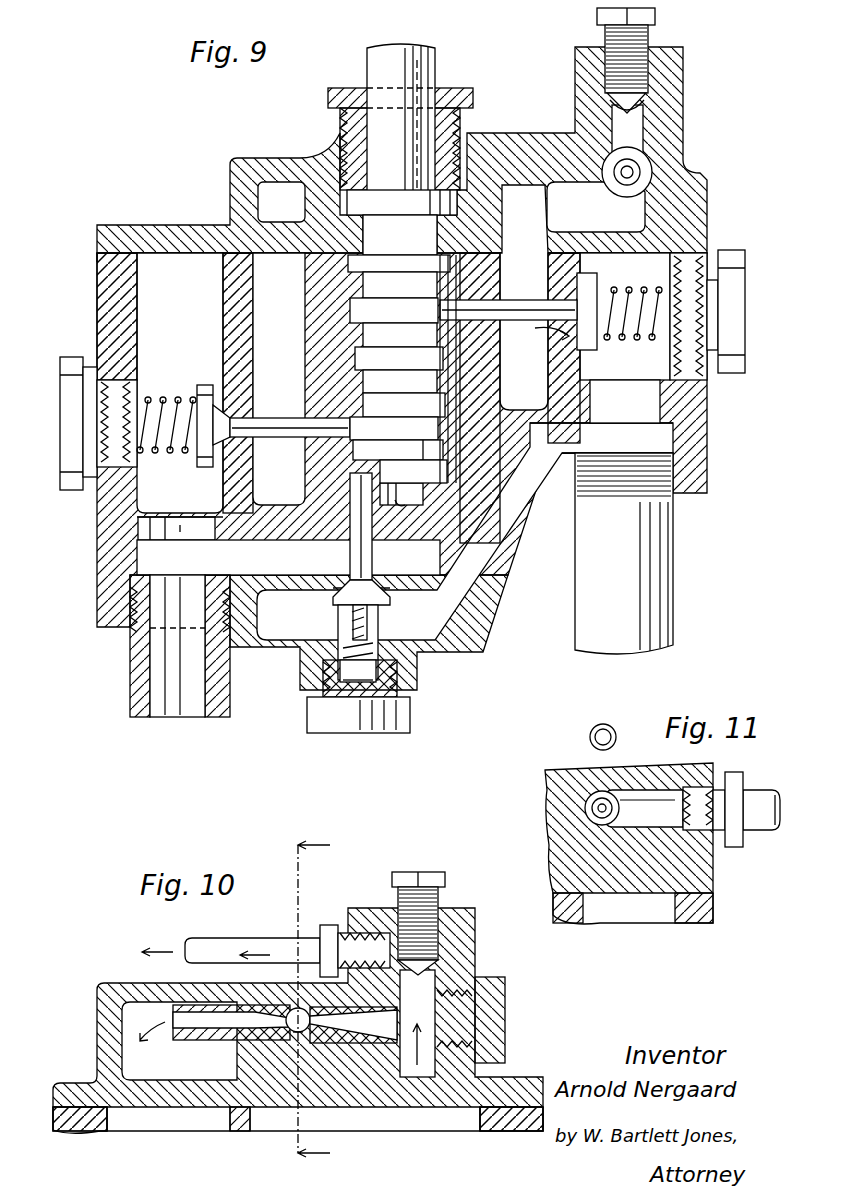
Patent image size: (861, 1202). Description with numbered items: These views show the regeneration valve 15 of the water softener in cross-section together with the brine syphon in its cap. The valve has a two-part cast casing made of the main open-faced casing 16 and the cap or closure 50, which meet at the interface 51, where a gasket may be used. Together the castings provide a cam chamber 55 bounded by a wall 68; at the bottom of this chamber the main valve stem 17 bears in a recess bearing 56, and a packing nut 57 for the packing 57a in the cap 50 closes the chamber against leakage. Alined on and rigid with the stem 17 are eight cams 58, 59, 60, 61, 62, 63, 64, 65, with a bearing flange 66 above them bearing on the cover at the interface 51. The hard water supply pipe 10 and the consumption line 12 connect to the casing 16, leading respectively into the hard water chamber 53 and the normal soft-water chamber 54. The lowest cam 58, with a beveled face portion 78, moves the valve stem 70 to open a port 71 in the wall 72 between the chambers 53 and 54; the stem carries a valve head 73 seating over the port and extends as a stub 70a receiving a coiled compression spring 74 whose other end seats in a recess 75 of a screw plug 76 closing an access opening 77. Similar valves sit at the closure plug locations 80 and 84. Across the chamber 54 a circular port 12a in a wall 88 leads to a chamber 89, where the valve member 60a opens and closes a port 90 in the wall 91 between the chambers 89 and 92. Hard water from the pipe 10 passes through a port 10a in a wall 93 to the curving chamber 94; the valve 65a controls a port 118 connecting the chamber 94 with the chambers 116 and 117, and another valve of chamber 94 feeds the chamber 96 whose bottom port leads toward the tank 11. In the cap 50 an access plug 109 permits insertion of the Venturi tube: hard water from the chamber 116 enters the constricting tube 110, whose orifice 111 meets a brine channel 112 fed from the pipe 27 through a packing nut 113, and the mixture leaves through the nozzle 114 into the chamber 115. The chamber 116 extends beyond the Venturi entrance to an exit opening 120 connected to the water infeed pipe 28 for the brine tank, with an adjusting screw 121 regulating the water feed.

In FIG. 9, the hard water supply pipe 10 is at (668, 580).
In FIG. 9, the port 10a is at (631, 405).
In FIG. 10, the tank 11 is at (327, 1001).
In FIG. 9, the consumption line 12 is at (135, 685).
In FIG. 9, the circular port 12a is at (172, 534).
In FIG. 9, the valve 15 is at (84, 265).
In FIG. 9, the main open-faced casing 16 is at (97, 292).
In FIG. 10, the main open-faced casing 16 is at (56, 1120).
In FIG. 11, the main open-faced casing 16 is at (713, 920).
In FIG. 9, the main valve stem 17 is at (437, 62).
In FIG. 11, the brine pipe 27 is at (768, 834).
In FIG. 10, the water infeed pipe 28 is at (222, 946).
In FIG. 11, the water infeed pipe 28 is at (605, 724).
In FIG. 9, the casing cap 50 is at (219, 200).
In FIG. 10, the casing cap 50 is at (86, 1001).
In FIG. 11, the casing cap 50 is at (713, 880).
In FIG. 9, the interface 51 is at (128, 258).
In FIG. 10, the interface 51 is at (75, 1112).
In FIG. 11, the interface 51 is at (705, 902).
In FIG. 9, the hard water chamber 53 is at (478, 592).
In FIG. 9, the normal soft-water chamber 54 is at (150, 562).
In FIG. 9, the cam chamber 55 is at (478, 384).
In FIG. 9, the recess bearing 56 is at (400, 505).
In FIG. 9, the packing nut 57 is at (470, 92).
In FIG. 9, the packing 57a is at (385, 198).
In FIG. 9, the cam 58 is at (415, 481).
In FIG. 9, the cam 59 is at (391, 459).
In FIG. 9, the cam 60 is at (399, 437).
In FIG. 9, the valve member 60a is at (284, 438).
In FIG. 9, the cam 61 is at (399, 413).
In FIG. 9, the cam 62 is at (399, 390).
In FIG. 9, the cam 63 is at (399, 367).
In FIG. 9, the cam 64 is at (399, 343).
In FIG. 9, the cam 65 is at (394, 319).
In FIG. 9, the valve 65a is at (528, 312).
In FIG. 9, the bearing flange 66 is at (399, 276).
In FIG. 9, the wall 68 is at (488, 282).
In FIG. 9, the valve stem 70 is at (372, 553).
In FIG. 9, the stub 70a is at (368, 624).
In FIG. 9, the port 71 is at (346, 578).
In FIG. 9, the wall 72 is at (290, 590).
In FIG. 9, the valve head 73 is at (392, 590).
In FIG. 9, the coiled compression spring 74 is at (340, 658).
In FIG. 9, the recess 75 is at (360, 683).
In FIG. 9, the screw plug 76 is at (310, 720).
In FIG. 9, the access opening 77 is at (345, 632).
In FIG. 9, the beveled portion 78 is at (411, 450).
In FIG. 9, the plug location 80 is at (66, 476).
In FIG. 9, the plug location 84 is at (740, 305).
In FIG. 9, the wall 88 is at (137, 528).
In FIG. 9, the chamber 89 is at (188, 346).
In FIG. 9, the port 90 is at (243, 405).
In FIG. 9, the wall 91 is at (250, 283).
In FIG. 9, the chamber 92 is at (289, 326).
In FIG. 9, the wall 93 is at (570, 425).
In FIG. 9, the curving chamber 94 is at (641, 364).
In FIG. 10, the curving chamber 94 is at (471, 1128).
In FIG. 10, the chamber 96 is at (180, 1122).
In FIG. 10, the access plug 109 is at (500, 988).
In FIG. 9, the constricting tube 110 is at (642, 168).
In FIG. 10, the constricting tube 110 is at (356, 1045).
In FIG. 10, the orifice 111 is at (305, 1045).
In FIG. 10, the brine channel 112 is at (295, 1006).
In FIG. 11, the brine channel 112 is at (640, 800).
In FIG. 11, the packing nut 113 is at (735, 772).
In FIG. 10, the nozzle 114 is at (210, 1040).
In FIG. 11, the nozzle 114 is at (614, 813).
In FIG. 10, the chamber 115 is at (135, 1052).
In FIG. 9, the chamber 116 is at (600, 217).
In FIG. 10, the chamber 116 is at (418, 1078).
In FIG. 9, the chamber 117 is at (533, 356).
In FIG. 9, the port 118 is at (537, 330).
In FIG. 9, the exit opening 120 is at (642, 110).
In FIG. 10, the exit opening 120 is at (404, 952).
In FIG. 9, the adjusting screw 121 is at (648, 35).
In FIG. 10, the adjusting screw 121 is at (425, 877).